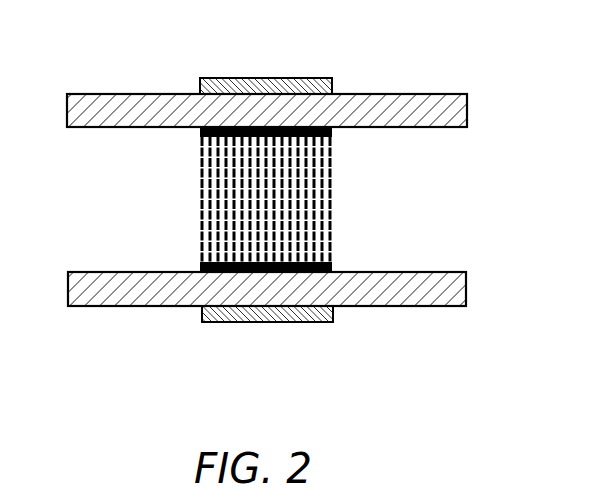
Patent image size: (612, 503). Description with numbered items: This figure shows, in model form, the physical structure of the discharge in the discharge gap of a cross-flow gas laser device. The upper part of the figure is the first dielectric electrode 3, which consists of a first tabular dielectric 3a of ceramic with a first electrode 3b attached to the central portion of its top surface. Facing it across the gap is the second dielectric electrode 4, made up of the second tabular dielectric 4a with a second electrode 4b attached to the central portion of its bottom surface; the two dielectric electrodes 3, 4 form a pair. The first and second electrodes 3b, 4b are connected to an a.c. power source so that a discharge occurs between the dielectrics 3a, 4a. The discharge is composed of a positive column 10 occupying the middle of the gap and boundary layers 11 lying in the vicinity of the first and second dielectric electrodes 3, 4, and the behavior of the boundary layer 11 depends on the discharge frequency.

The first dielectric electrode 3 is at (283, 74).
The first tabular dielectric 3a is at (442, 94).
The first electrode 3b is at (310, 76).
The second dielectric electrode 4 is at (286, 343).
The second tabular dielectric 4a is at (440, 307).
The second electrode 4b is at (333, 320).
The positive column 10 is at (340, 260).
The boundary layer 11 is at (196, 133).